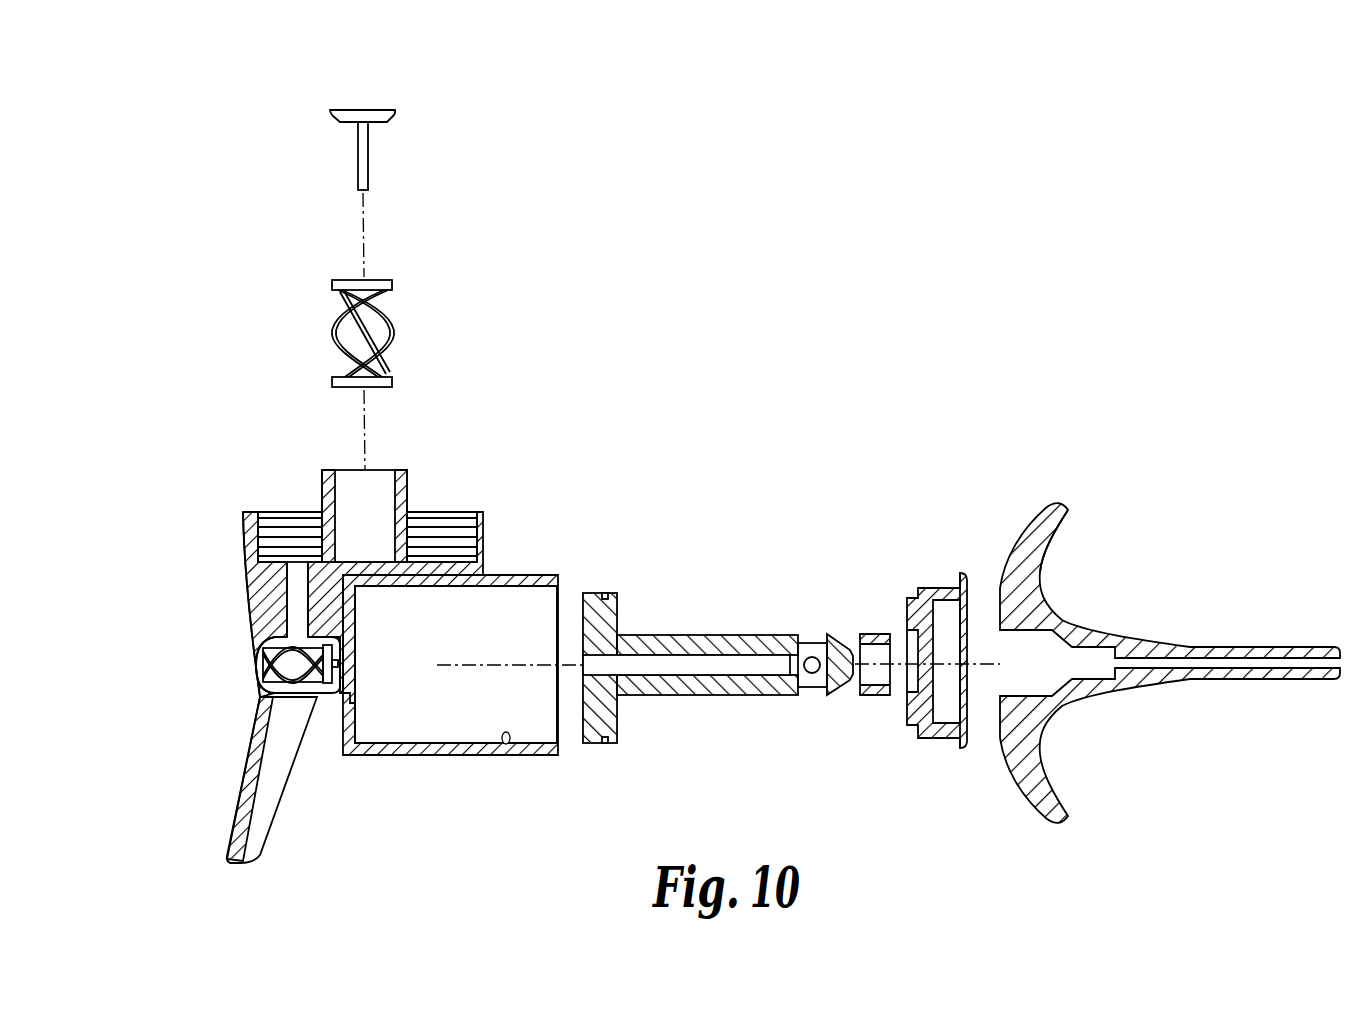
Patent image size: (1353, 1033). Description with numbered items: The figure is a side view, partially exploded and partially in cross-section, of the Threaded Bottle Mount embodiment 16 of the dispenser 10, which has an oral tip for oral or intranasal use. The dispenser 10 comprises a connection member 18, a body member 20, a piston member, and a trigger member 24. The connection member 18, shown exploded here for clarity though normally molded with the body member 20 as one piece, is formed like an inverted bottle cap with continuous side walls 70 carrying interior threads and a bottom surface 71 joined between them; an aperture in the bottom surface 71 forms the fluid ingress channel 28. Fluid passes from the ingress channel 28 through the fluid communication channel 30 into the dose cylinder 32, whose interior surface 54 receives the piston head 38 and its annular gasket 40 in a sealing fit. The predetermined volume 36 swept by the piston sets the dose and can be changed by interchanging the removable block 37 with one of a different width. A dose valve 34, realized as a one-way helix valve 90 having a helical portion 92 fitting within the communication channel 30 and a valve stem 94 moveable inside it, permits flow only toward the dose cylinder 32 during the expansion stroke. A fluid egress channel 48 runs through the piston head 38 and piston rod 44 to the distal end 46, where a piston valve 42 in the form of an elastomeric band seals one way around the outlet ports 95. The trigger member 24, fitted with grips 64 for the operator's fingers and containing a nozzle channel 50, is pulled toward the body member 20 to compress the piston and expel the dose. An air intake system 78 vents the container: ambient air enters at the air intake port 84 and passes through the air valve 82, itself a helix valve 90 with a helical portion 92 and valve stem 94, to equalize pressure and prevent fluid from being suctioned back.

The dispenser 10 is at (808, 425).
The Threaded Bottle Mount embodiment 16 is at (672, 384).
The connection member 18 is at (303, 591).
The body member 20 is at (306, 780).
The trigger member 24 is at (1170, 663).
The fluid ingress channel 28 is at (280, 578).
The fluid communication channel 30 is at (260, 623).
The dose cylinder 32 is at (463, 755).
The dose valve 34 is at (223, 647).
The predetermined volume 36 is at (494, 762).
The removable block 37 is at (935, 588).
The piston head 38 is at (592, 743).
The annular gasket 40 is at (603, 600).
The piston valve 42 is at (868, 633).
The piston rod 44 is at (693, 695).
The distal end 46 is at (827, 695).
The fluid egress channel 48 is at (790, 695).
The nozzle channel 50 is at (1005, 656).
The interior surface 54 is at (506, 744).
The grips 64 is at (1042, 560).
The side walls 70 is at (483, 527).
The bottom surface 71 is at (456, 664).
The air intake system 78 is at (426, 152).
The air valve 82 is at (298, 348).
The air intake port 84 is at (365, 560).
The helix valve 90 is at (251, 670).
The helical portion 92 is at (393, 342).
The valve stem 94 is at (372, 175).
The outlet ports 95 is at (817, 657).